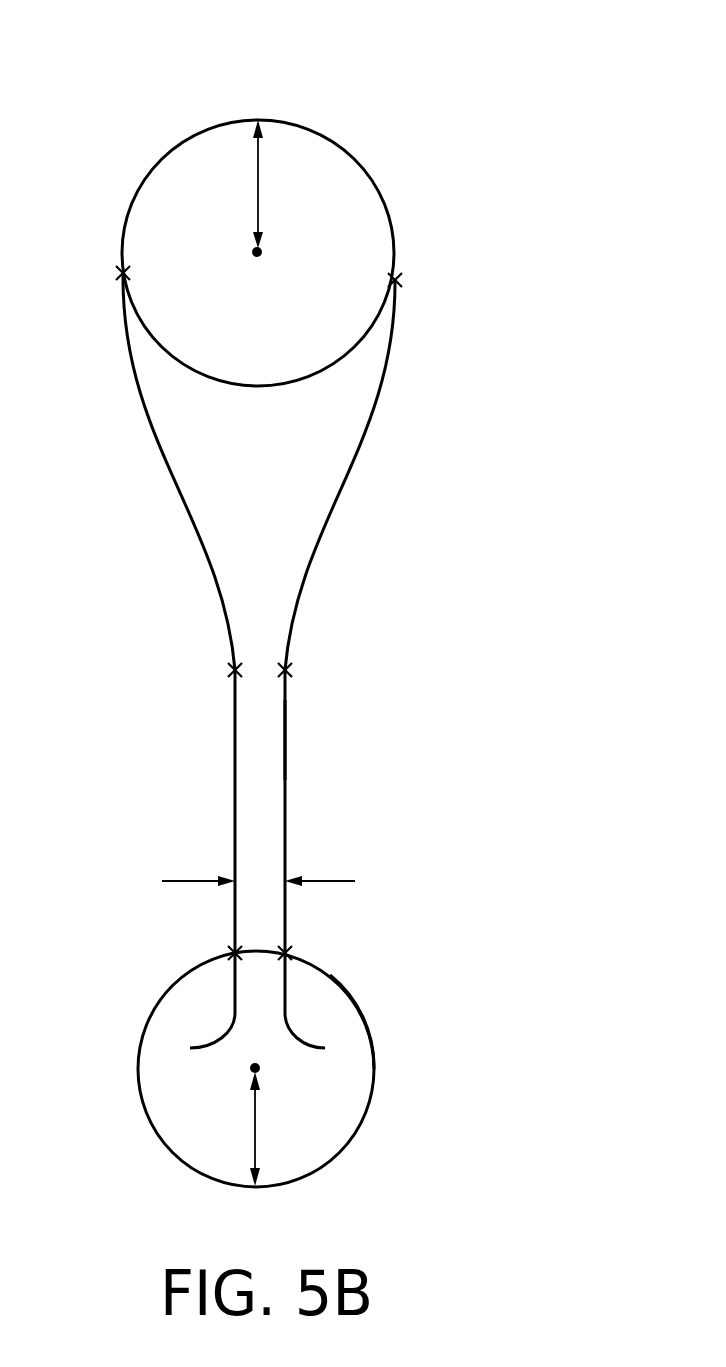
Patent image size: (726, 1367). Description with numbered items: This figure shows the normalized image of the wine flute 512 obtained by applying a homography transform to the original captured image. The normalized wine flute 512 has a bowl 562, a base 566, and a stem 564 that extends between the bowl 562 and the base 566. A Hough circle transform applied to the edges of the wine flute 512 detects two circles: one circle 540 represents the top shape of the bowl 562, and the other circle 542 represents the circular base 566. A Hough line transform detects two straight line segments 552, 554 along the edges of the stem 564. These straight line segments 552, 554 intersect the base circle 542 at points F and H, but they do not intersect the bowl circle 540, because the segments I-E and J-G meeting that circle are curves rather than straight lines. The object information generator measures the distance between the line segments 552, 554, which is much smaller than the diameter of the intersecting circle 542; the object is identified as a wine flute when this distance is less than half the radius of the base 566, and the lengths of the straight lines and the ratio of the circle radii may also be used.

The wine flute 512 is at (316, 59).
The circle 540 is at (355, 242).
The circle 542 is at (345, 1103).
The straight line segment 552 is at (285, 773).
The straight line segment 554 is at (235, 788).
The bowl 562 is at (315, 448).
The stem 564 is at (272, 747).
The base 566 is at (357, 1003).